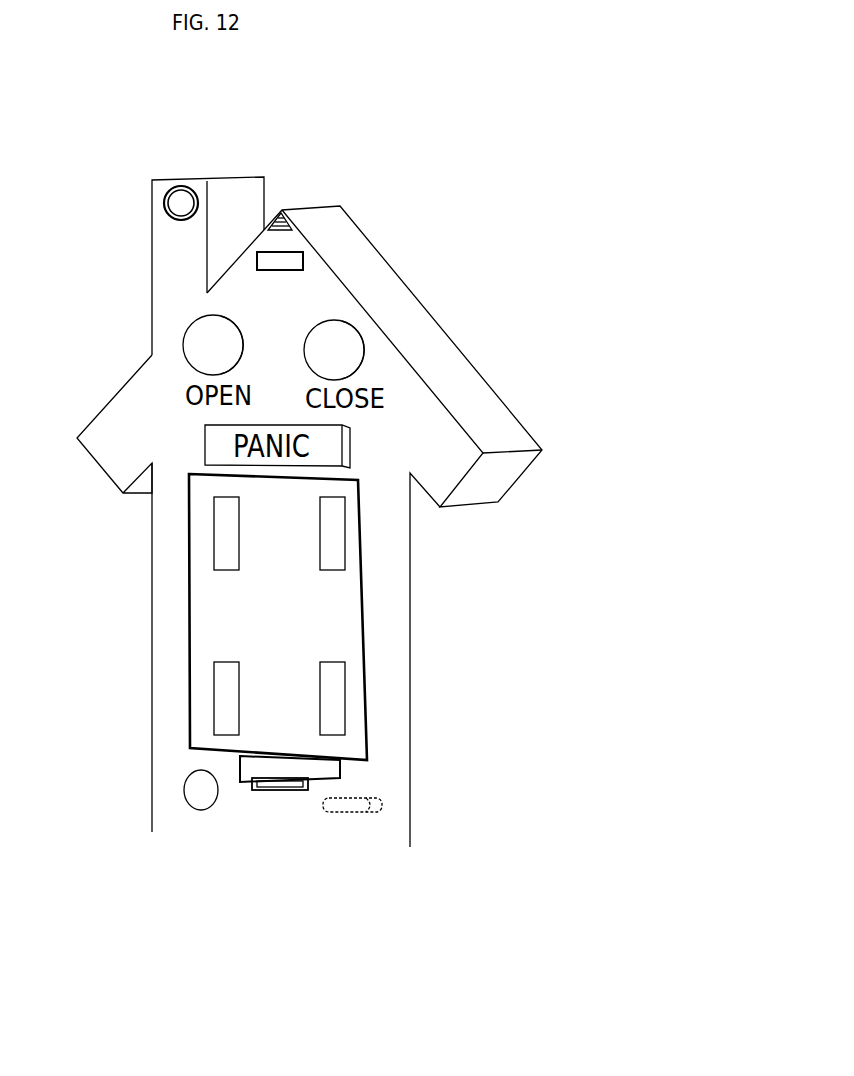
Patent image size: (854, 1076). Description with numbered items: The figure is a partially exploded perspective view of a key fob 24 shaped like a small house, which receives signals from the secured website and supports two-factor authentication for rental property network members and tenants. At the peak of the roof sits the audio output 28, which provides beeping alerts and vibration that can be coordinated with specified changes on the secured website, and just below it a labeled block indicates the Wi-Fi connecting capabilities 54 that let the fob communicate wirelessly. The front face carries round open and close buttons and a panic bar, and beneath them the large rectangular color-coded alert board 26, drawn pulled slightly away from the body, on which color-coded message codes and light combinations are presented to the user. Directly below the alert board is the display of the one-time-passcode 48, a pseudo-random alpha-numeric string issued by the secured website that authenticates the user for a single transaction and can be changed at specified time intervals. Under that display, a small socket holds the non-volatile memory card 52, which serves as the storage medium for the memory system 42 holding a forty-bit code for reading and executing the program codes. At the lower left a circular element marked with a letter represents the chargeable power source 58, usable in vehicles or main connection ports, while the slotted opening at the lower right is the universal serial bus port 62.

The key fob 24 is at (303, 258).
The audio output 28 is at (292, 214).
The Wi-Fi connecting capabilities 54 is at (383, 258).
The color-coded alert board 26 is at (188, 623).
The one-time-passcode 48 is at (312, 765).
The non-volatile memory card 52 is at (262, 790).
The memory system 42 is at (290, 790).
The chargeable power source 58 is at (190, 806).
The universal serial bus port 62 is at (365, 810).